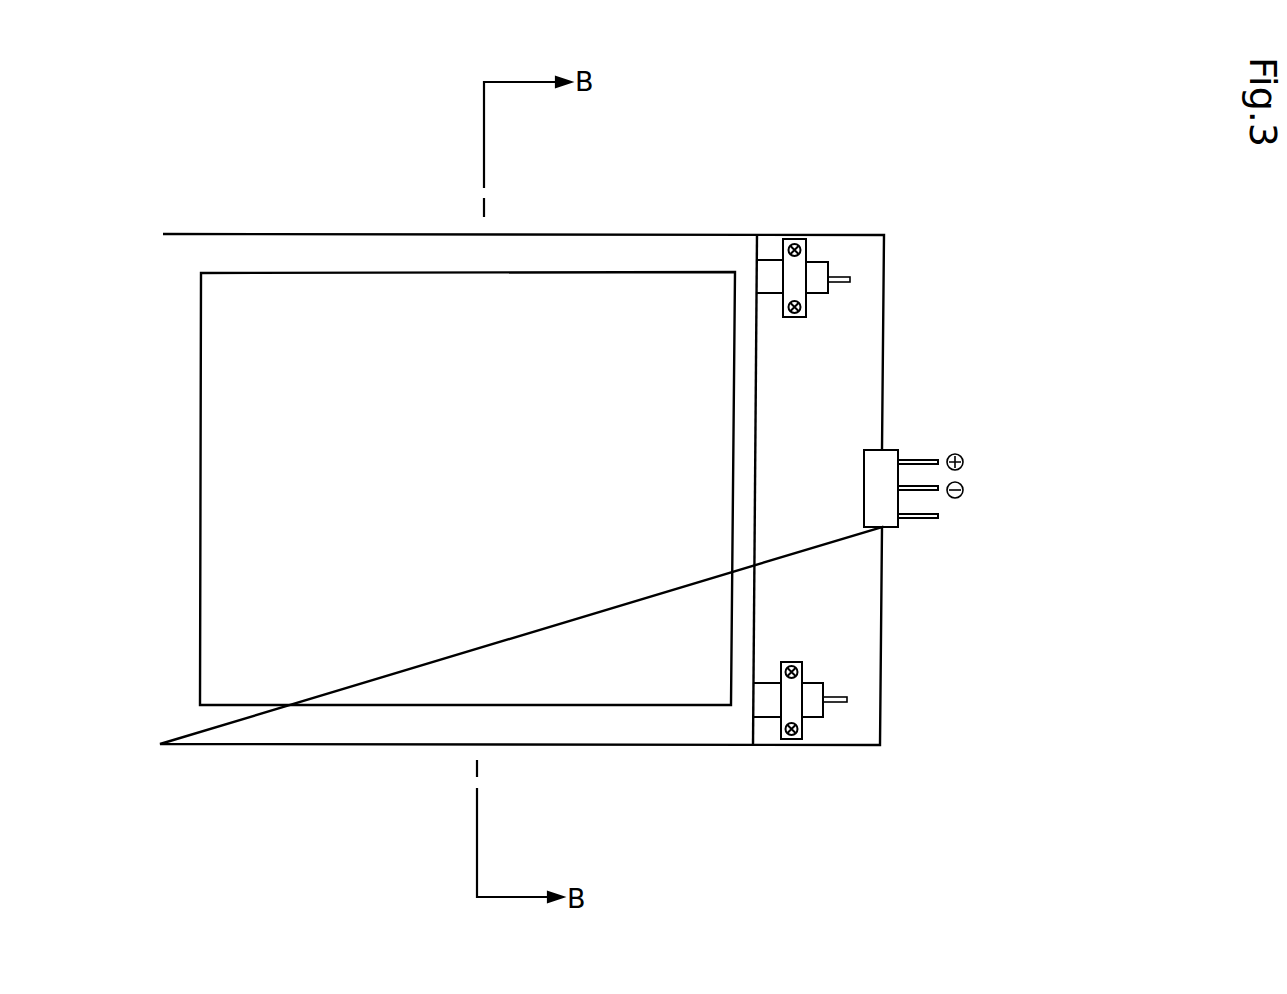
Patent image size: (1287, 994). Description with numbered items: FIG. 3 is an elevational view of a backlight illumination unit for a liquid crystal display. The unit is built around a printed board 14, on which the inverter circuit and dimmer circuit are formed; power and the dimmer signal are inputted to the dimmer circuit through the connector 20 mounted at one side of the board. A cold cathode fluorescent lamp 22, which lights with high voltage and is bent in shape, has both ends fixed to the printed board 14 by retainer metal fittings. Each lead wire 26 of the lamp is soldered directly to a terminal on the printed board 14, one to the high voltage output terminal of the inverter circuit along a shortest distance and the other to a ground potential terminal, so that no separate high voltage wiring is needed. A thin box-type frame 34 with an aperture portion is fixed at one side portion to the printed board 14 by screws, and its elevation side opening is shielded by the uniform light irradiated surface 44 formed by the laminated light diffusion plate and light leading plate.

The printed board 14 is at (867, 617).
The connector 20 is at (895, 450).
The cold cathode fluorescent lamp 22 is at (822, 262).
The lead wire 26 is at (849, 278).
The frame 34 is at (616, 234).
The light irradiated surface 44 is at (660, 676).